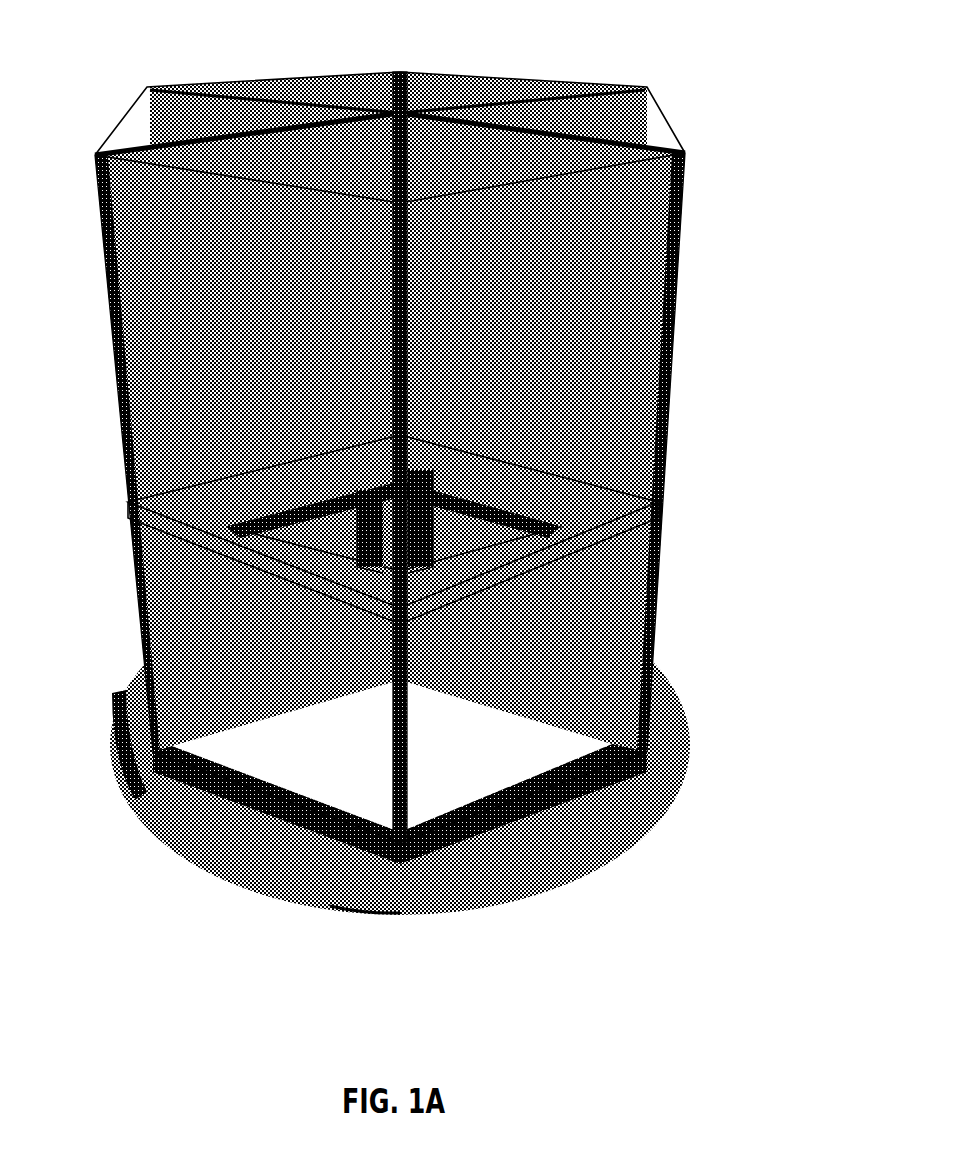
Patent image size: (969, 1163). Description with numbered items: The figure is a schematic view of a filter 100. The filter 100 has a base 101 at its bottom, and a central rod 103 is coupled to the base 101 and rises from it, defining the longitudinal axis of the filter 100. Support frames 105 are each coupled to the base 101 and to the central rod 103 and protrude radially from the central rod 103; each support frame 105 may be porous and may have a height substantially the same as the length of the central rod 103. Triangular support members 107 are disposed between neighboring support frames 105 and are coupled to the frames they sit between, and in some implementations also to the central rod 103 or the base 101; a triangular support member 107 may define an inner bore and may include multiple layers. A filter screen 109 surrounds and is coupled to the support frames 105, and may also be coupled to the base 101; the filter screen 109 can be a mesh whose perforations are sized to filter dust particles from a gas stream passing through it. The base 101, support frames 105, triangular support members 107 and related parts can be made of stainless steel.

The filter 100 is at (422, 532).
The base 101 is at (200, 863).
The central rod 103 is at (407, 112).
The support frame 105 is at (165, 140).
The triangular support member 107 is at (148, 519).
The filter screen 109 is at (667, 111).